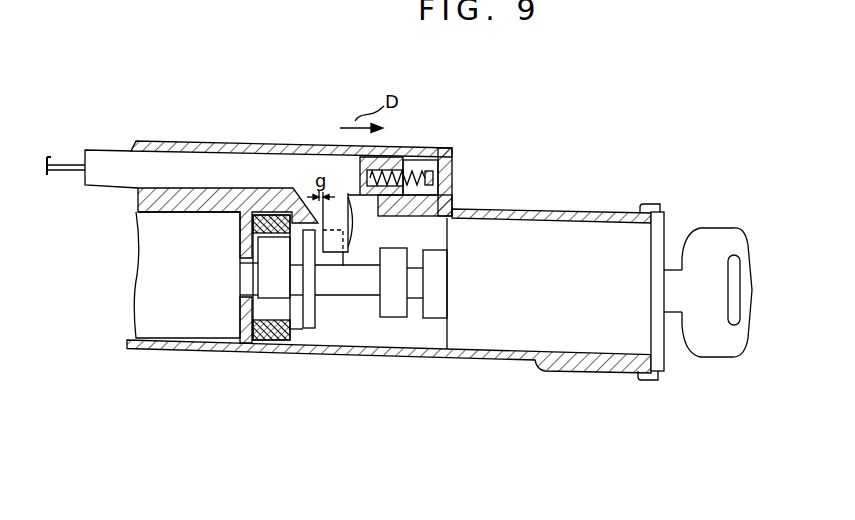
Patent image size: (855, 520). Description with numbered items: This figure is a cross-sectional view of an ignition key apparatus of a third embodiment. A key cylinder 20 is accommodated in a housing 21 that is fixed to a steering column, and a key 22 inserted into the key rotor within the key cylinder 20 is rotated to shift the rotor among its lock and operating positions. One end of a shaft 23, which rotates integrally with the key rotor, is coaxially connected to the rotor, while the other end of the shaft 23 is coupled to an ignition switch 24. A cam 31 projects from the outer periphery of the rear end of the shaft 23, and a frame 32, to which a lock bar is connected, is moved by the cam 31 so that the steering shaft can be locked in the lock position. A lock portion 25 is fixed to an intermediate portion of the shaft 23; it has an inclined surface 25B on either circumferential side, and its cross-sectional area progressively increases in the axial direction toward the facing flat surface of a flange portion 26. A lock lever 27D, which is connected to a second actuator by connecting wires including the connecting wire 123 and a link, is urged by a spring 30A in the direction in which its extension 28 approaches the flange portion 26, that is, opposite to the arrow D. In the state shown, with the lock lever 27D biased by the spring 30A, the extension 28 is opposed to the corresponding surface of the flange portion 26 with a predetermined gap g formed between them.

The connecting wire 123 is at (68, 163).
The lock lever 27D is at (193, 163).
The extension 28 is at (348, 196).
The spring 30A is at (413, 163).
The housing 21 is at (530, 212).
The ignition switch 24 is at (172, 328).
The cam 31 is at (252, 347).
The frame 32 is at (263, 345).
The flange portion 26 is at (298, 328).
The inclined surface 25B is at (330, 257).
The lock portion 25 is at (340, 257).
The shaft 23 is at (370, 296).
The key cylinder 20 is at (590, 340).
The key 22 is at (702, 352).